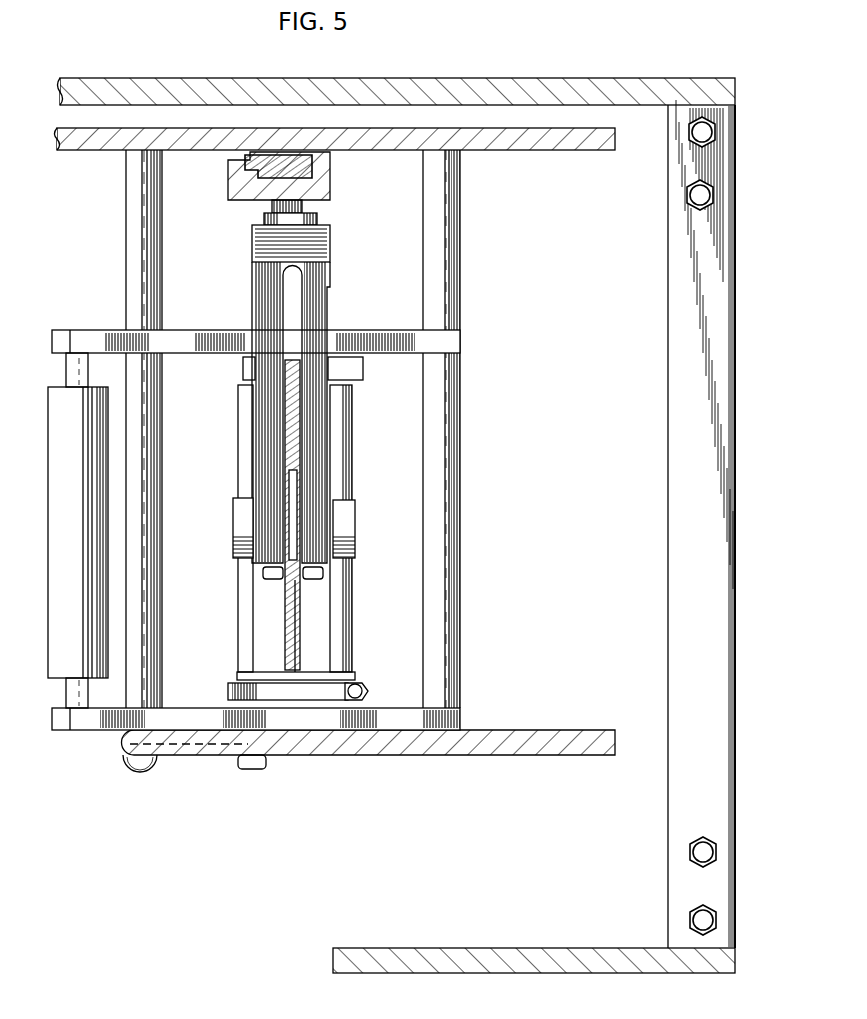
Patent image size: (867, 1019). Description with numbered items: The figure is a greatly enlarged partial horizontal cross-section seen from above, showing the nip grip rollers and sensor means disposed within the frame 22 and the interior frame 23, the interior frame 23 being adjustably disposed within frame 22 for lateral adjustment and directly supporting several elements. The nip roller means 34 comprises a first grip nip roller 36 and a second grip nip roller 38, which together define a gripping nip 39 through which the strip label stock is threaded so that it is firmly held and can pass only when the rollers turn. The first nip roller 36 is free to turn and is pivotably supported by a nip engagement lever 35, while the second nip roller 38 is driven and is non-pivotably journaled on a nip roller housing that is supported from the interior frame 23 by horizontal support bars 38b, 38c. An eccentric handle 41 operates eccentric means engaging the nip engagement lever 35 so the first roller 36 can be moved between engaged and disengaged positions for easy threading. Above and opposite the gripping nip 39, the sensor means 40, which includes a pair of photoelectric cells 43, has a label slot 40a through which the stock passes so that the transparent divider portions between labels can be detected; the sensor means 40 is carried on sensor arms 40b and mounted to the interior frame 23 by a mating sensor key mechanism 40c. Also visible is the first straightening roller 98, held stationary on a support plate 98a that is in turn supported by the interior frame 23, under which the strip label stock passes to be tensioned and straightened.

The frame 22 is at (470, 86).
The interior frame 23 is at (513, 134).
The nip roller means 34 is at (233, 588).
The nip engagement lever 35 is at (306, 702).
The first grip nip roller 36 is at (253, 636).
The second grip nip roller 38 is at (326, 634).
The horizontal support bar 38b is at (440, 434).
The horizontal support bar 38c is at (162, 250).
The gripping nip 39 is at (296, 613).
The sensor means 40 is at (314, 497).
The label slot 40a is at (298, 530).
The sensor arms 40b is at (316, 309).
The mating sensor key mechanism 40c is at (310, 177).
The eccentric handle 41 is at (191, 764).
The photoelectric cells 43 is at (246, 520).
The first straightening roller 98 is at (85, 534).
The support plate 98a is at (192, 345).